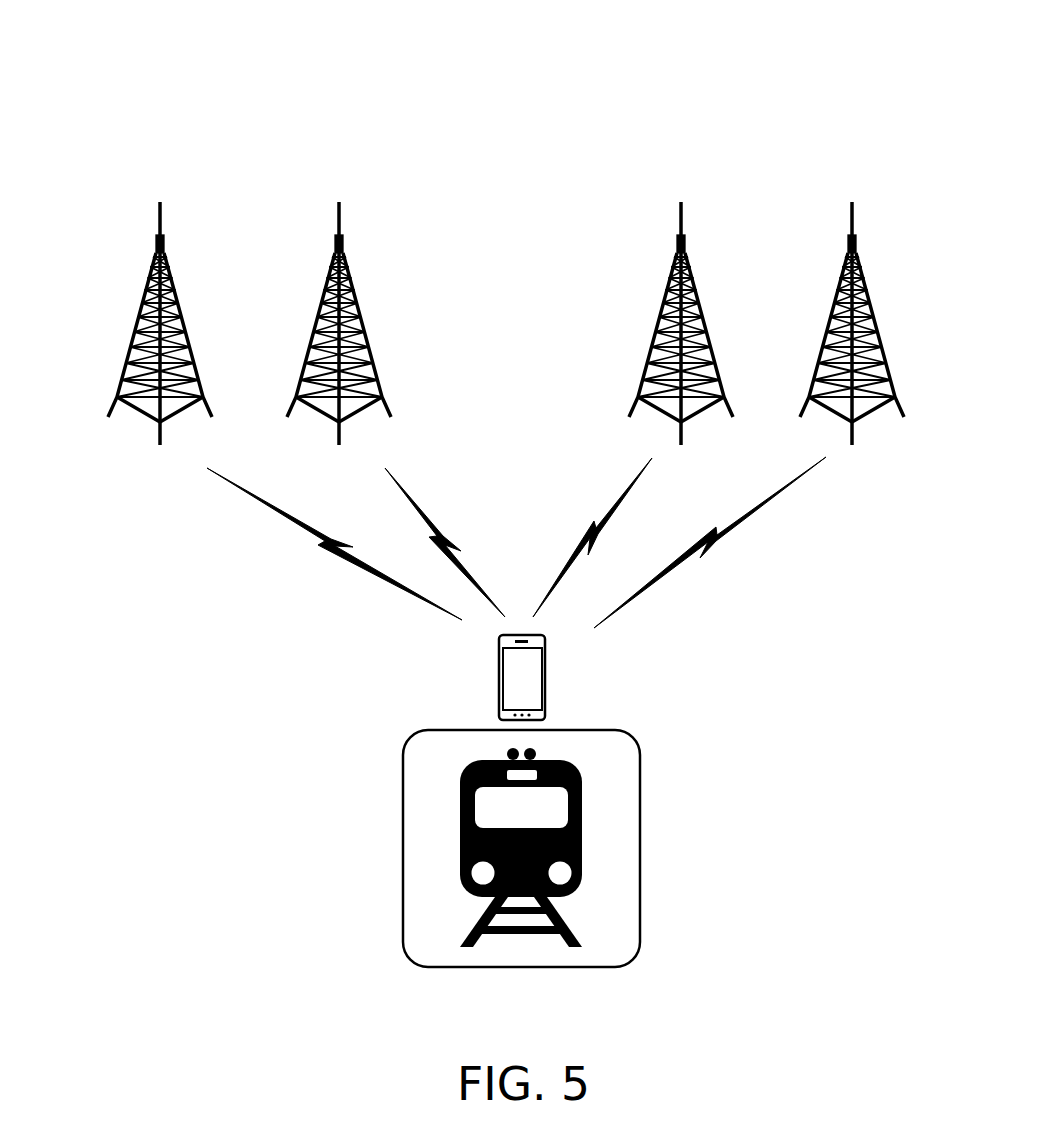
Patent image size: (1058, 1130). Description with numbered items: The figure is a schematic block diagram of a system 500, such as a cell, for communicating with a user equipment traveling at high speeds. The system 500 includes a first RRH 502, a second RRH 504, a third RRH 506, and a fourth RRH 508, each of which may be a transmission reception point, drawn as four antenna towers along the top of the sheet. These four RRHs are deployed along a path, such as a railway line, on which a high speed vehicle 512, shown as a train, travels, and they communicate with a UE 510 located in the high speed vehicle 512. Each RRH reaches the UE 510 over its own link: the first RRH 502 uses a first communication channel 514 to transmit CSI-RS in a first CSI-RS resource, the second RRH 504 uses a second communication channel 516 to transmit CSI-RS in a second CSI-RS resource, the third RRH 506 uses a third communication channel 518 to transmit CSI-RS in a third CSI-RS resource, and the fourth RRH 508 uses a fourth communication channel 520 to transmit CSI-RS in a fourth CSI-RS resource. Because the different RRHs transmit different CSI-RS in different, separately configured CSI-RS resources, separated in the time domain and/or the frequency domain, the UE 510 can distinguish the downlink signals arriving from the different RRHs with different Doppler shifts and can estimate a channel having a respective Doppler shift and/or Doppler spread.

The system 500 is at (133, 68).
The first RRH 502 is at (135, 347).
The second RRH 504 is at (314, 347).
The third RRH 506 is at (706, 338).
The fourth RRH 508 is at (877, 338).
The UE 510 is at (500, 675).
The high speed vehicle 512 is at (640, 845).
The first communication channel 514 is at (300, 521).
The second communication channel 516 is at (432, 521).
The third communication channel 518 is at (607, 527).
The fourth communication channel 520 is at (750, 514).